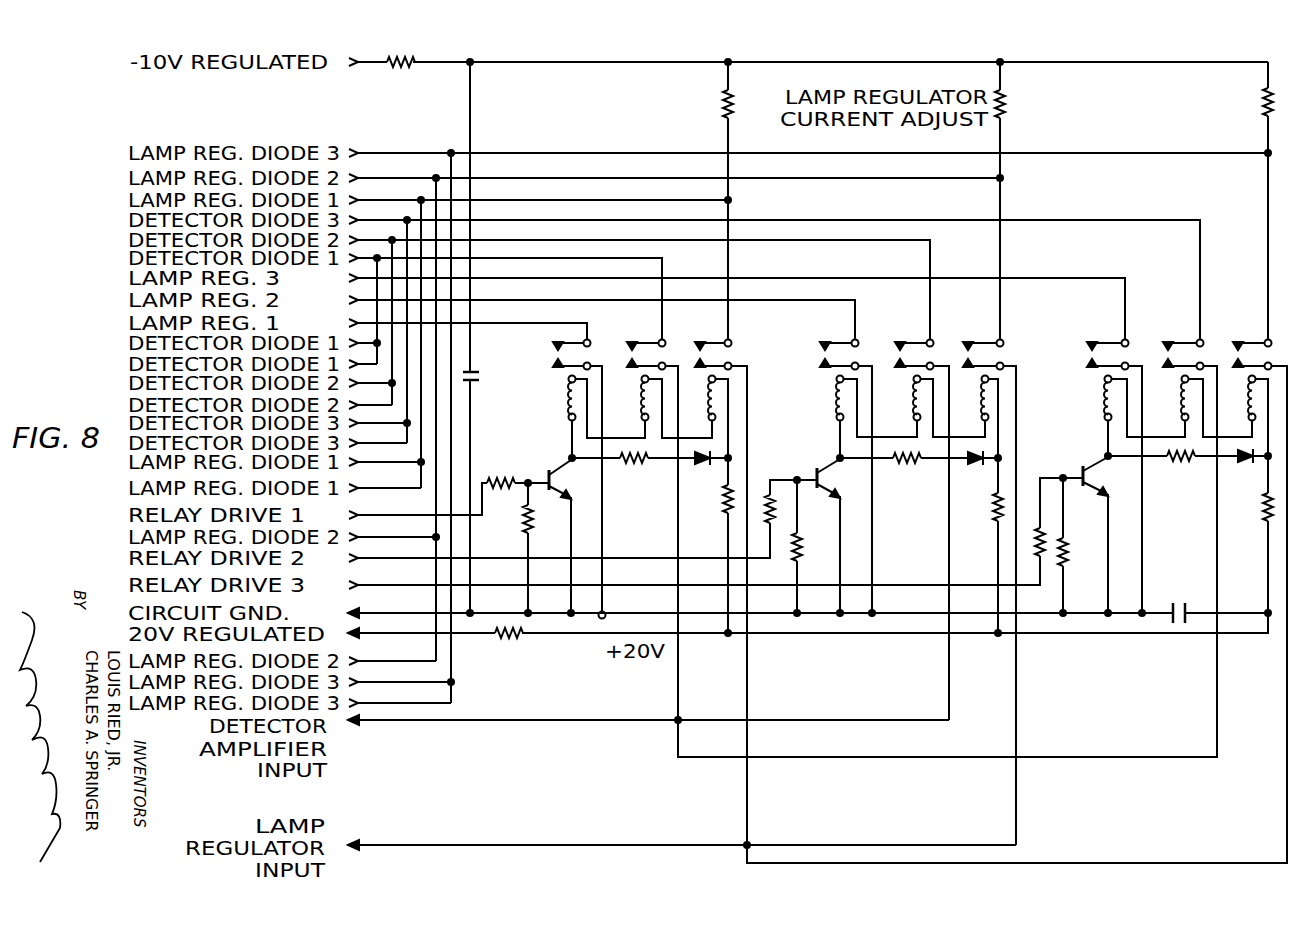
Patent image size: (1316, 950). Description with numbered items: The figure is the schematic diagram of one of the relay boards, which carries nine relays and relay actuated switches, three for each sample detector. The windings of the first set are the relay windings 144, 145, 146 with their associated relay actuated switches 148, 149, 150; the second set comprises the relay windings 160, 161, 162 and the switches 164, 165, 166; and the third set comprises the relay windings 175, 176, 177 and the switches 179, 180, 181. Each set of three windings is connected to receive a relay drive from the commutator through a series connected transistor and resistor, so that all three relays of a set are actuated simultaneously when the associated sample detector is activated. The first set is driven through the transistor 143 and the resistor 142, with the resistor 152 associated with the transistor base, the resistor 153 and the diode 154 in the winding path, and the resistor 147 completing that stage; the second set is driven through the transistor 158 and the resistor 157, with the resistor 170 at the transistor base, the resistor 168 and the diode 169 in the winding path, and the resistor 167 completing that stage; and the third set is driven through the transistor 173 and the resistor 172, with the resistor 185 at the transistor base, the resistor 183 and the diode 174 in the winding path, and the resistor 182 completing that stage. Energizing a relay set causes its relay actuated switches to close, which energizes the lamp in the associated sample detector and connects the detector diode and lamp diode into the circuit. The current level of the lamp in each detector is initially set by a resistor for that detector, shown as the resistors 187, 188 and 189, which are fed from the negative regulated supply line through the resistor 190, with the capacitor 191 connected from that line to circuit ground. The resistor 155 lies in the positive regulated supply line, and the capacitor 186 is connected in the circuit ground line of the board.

The resistor 142 is at (514, 476).
The transistor 143 is at (537, 480).
The relay coil 144 is at (560, 408).
The relay coil 145 is at (632, 407).
The relay coil 146 is at (704, 407).
The resistor 147 is at (724, 493).
The relay contacts 148 is at (566, 340).
The relay contacts 149 is at (619, 352).
The relay contacts 150 is at (685, 352).
The resistor 152 is at (519, 513).
The resistor 153 is at (652, 470).
The diode 154 is at (714, 469).
The resistor 155 is at (534, 640).
The resistor 157 is at (755, 498).
The transistor 158 is at (807, 477).
The relay coil 160 is at (828, 403).
The relay coil 161 is at (905, 405).
The relay coil 162 is at (978, 405).
The relay contacts 164 is at (810, 352).
The relay contacts 165 is at (885, 352).
The relay contacts 166 is at (955, 352).
The resistor 167 is at (990, 517).
The resistor 168 is at (924, 469).
The diode 169 is at (986, 470).
The resistor 170 is at (808, 562).
The resistor 172 is at (1029, 500).
The transistor 173 is at (1079, 474).
The diode 174 is at (1254, 469).
The relay coil 175 is at (1096, 399).
The relay coil 176 is at (1175, 401).
The relay coil 177 is at (1246, 401).
The relay contacts 179 is at (1079, 351).
The relay contacts 180 is at (1162, 351).
The relay contacts 181 is at (1225, 351).
The resistor 182 is at (1263, 514).
The resistor 183 is at (1196, 468).
The resistor 185 is at (1077, 558).
The capacitor 186 is at (1183, 592).
The resistor 187 is at (1257, 99).
The resistor 188 is at (1008, 100).
The resistor 189 is at (719, 116).
The resistor 190 is at (416, 50).
The capacitor 191 is at (500, 381).